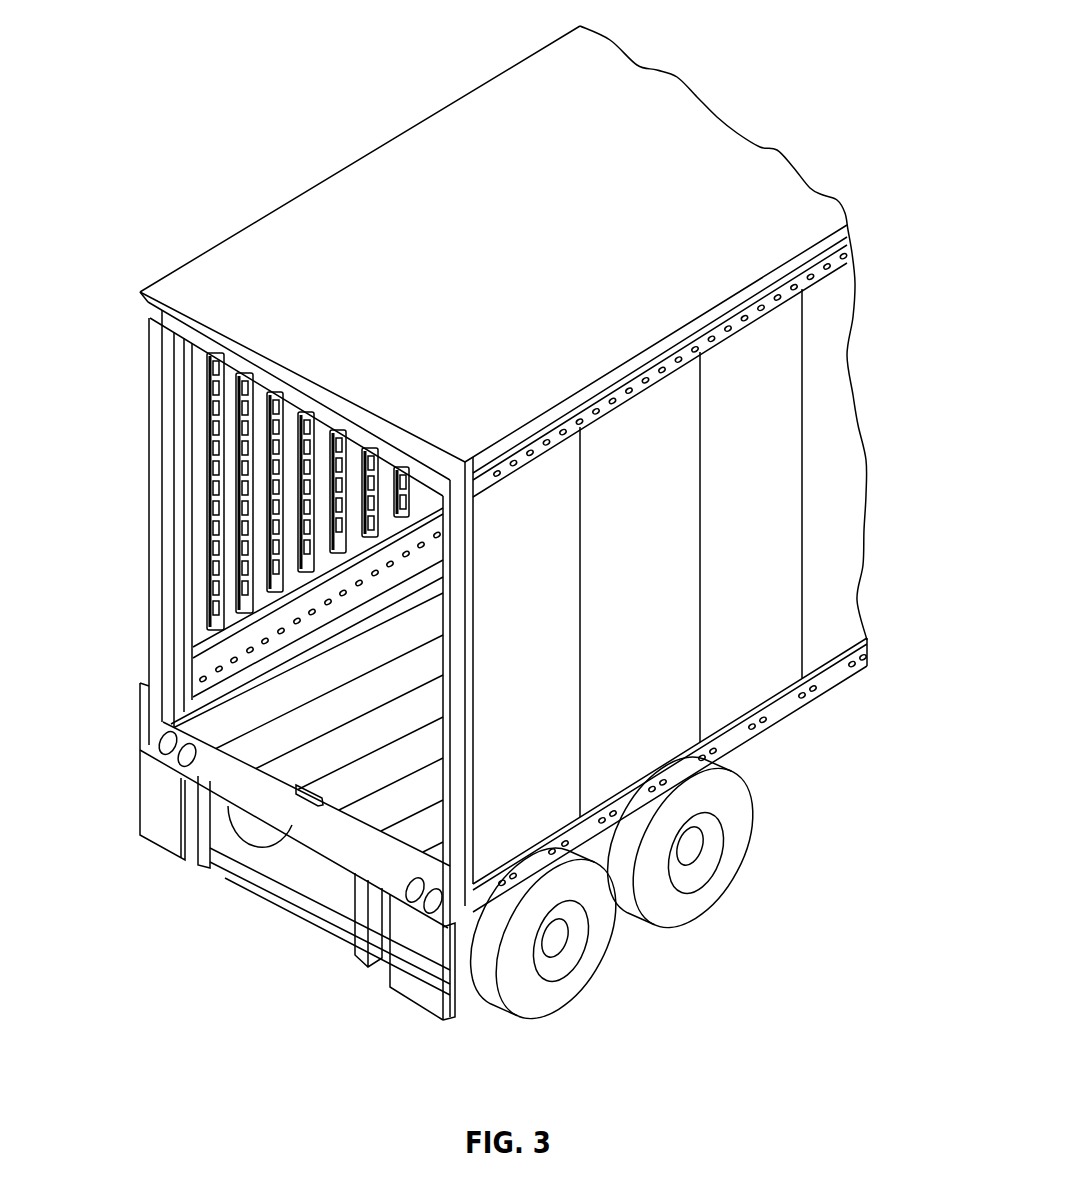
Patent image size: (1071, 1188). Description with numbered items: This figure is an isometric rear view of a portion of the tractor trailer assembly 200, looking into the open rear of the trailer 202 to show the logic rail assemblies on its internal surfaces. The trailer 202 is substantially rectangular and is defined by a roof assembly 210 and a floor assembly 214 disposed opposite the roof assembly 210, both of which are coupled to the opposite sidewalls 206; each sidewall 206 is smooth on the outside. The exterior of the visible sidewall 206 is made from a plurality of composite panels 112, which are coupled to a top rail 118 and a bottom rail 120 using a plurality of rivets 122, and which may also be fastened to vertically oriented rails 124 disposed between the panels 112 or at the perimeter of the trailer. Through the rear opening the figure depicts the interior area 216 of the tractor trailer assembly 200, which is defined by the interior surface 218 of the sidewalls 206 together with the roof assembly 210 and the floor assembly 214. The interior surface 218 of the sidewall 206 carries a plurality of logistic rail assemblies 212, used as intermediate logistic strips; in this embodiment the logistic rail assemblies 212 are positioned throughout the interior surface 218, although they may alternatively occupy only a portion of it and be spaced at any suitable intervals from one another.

The tractor trailer assembly 200 is at (142, 56).
The trailer 202 is at (359, 128).
The sidewall 206 is at (772, 447).
The roof assembly 210 is at (478, 117).
The logistic rail assembly 212 is at (202, 430).
The floor assembly 214 is at (303, 747).
The interior area 216 is at (120, 523).
The interior surface 218 is at (202, 543).
The composite panel 112 is at (767, 641).
The top rail 118 is at (793, 283).
The bottom rail 120 is at (481, 892).
The rivet 122 is at (766, 729).
The vertical rail 124 is at (460, 768).